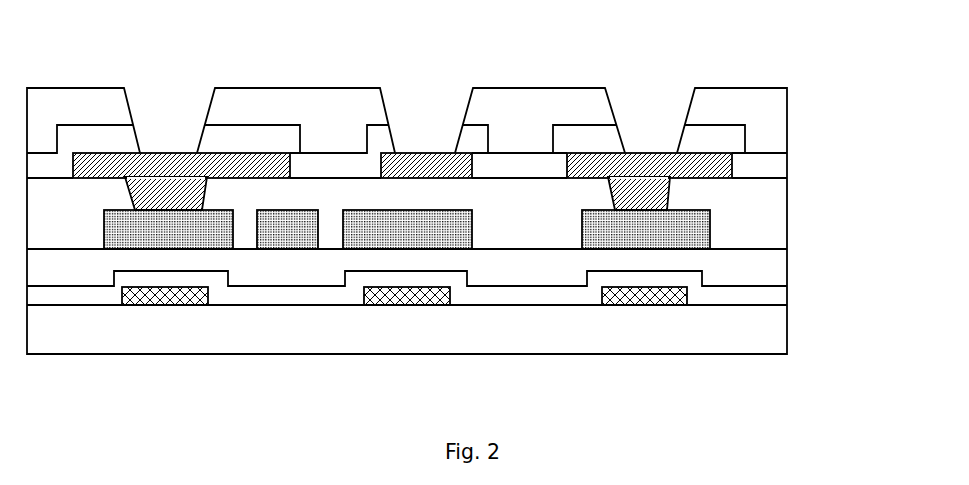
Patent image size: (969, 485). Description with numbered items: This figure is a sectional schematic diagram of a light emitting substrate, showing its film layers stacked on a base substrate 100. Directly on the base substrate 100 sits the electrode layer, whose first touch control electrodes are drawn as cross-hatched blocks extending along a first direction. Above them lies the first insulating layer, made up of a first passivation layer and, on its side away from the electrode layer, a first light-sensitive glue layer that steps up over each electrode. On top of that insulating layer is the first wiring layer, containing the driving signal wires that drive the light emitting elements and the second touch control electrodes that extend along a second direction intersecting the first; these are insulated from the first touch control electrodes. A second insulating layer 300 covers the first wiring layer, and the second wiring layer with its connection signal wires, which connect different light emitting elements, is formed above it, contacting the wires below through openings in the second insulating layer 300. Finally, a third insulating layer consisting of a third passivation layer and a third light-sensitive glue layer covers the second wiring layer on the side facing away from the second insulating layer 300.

The base substrate 100 is at (767, 330).
The second insulating layer 300 is at (767, 220).